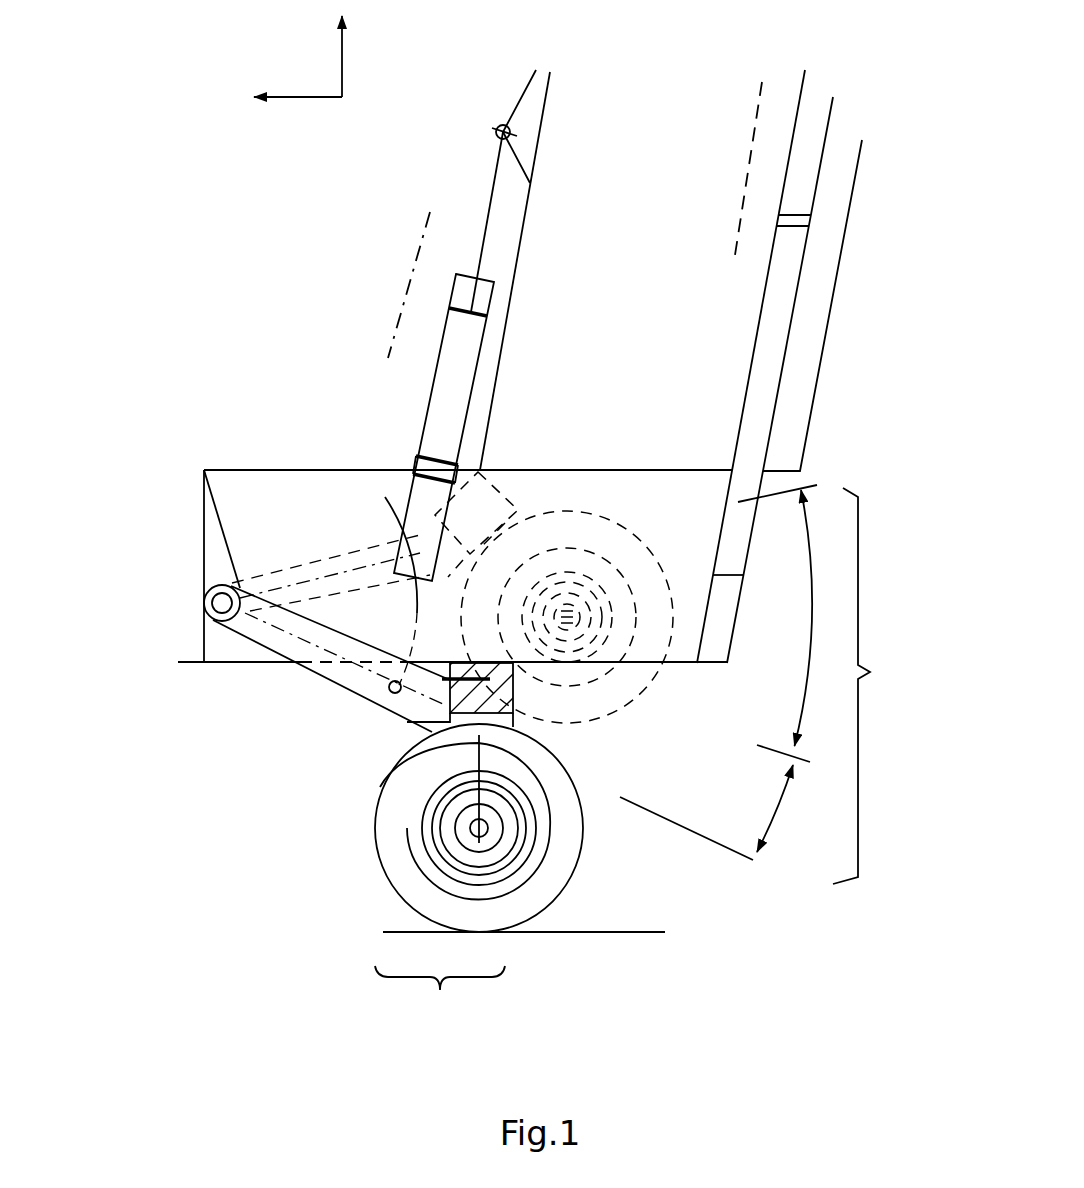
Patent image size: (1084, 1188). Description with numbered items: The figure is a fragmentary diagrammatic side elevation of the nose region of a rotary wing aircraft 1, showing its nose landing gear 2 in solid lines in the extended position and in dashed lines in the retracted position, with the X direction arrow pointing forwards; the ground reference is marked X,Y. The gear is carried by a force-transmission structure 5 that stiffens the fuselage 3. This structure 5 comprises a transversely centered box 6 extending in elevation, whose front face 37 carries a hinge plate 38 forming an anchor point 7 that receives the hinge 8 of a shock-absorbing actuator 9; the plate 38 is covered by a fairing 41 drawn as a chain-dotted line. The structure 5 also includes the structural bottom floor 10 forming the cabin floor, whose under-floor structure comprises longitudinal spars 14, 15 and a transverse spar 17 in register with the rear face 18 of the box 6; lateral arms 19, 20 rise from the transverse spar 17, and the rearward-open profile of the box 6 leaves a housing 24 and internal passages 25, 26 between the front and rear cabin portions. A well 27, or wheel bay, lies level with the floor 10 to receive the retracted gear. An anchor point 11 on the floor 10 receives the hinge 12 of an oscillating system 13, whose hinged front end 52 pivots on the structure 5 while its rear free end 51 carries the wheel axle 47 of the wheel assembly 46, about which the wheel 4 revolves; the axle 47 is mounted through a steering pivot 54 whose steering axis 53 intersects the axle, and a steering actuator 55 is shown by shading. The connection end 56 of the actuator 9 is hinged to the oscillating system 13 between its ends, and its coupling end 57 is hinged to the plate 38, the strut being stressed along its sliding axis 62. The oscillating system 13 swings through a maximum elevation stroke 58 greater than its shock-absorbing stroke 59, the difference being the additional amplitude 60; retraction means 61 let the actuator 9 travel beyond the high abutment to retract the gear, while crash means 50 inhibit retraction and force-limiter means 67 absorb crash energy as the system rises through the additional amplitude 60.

The rotary wing aircraft 1 is at (366, 306).
The landing gear 2 is at (500, 879).
The fuselage 3 is at (447, 719).
The wheel 4 is at (390, 860).
The force-transmission structure 5 is at (426, 305).
The box 6 is at (773, 363).
The anchor point 7 is at (530, 249).
The hinge 8 is at (495, 130).
The shock-absorbing actuator 9 is at (456, 427).
The structural bottom floor 10 is at (449, 592).
The anchor point 11 is at (178, 603).
The hinge 12 is at (204, 603).
The oscillating system 13 is at (330, 680).
The longitudinal spar 14 is at (462, 535).
The longitudinal spar 15 is at (250, 490).
The transverse spar 17 is at (728, 633).
The rear face 18 is at (778, 410).
The lateral arm 19 is at (838, 305).
The lateral arm 20 is at (808, 338).
The housing 24 is at (762, 86).
The internal passage 25 is at (722, 257).
The internal passage 26 is at (770, 300).
The well 27 is at (552, 494).
The front face 37 is at (545, 271).
The hinge plate 38 is at (545, 88).
The fairing 41 is at (422, 222).
The wheel assembly 46 is at (440, 1000).
The wheel axle 47 is at (483, 832).
The crash inhibiting means 50 is at (499, 427).
The rear free end 51 is at (551, 707).
The hinged front end 52 is at (252, 686).
The steering axis 53 is at (382, 787).
The steering pivot 54 is at (551, 694).
The steering actuator 55 is at (515, 698).
The connection end 56 is at (392, 694).
The coupling end 57 is at (522, 130).
The maximum elevation stroke 58 is at (871, 686).
The shock-absorbing stroke 59 is at (778, 808).
The additional amplitude 60 is at (814, 600).
The retraction means 61 is at (408, 448).
The sliding axis 62 is at (495, 180).
The force-limiter means 67 is at (470, 358).
The longitudinal direction X is at (282, 64).
The ground plane XY is at (605, 934).